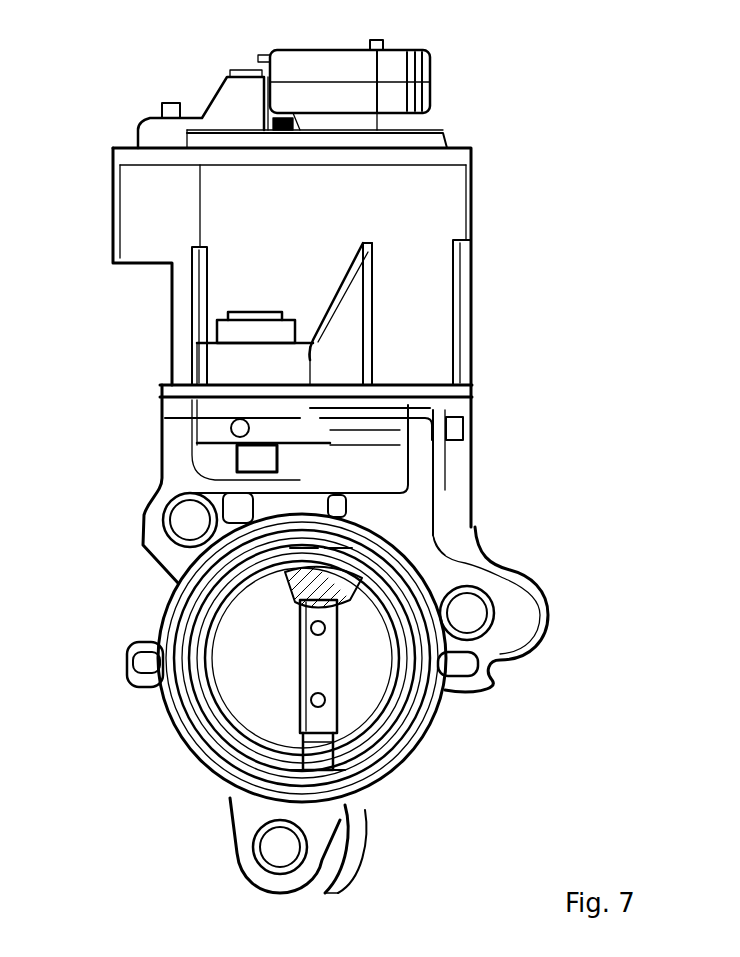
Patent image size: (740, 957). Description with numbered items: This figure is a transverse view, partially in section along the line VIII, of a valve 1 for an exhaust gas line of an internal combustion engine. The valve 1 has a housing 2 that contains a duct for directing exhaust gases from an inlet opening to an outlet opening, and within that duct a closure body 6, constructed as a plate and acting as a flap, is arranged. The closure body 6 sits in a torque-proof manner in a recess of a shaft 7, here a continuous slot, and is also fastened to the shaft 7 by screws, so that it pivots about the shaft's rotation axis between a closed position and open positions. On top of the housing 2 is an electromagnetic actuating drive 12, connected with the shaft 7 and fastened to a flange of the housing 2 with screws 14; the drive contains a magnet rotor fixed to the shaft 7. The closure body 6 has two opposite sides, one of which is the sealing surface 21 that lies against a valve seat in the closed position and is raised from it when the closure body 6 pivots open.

The valve 1 is at (490, 82).
The electromagnetic actuating drive 12 is at (453, 210).
The screws 14 is at (243, 333).
The housing 2 is at (458, 470).
The section line VIII is at (360, 550).
The shaft 7 is at (312, 655).
The closure body 6 is at (227, 687).
The sealing surface 21 is at (243, 718).